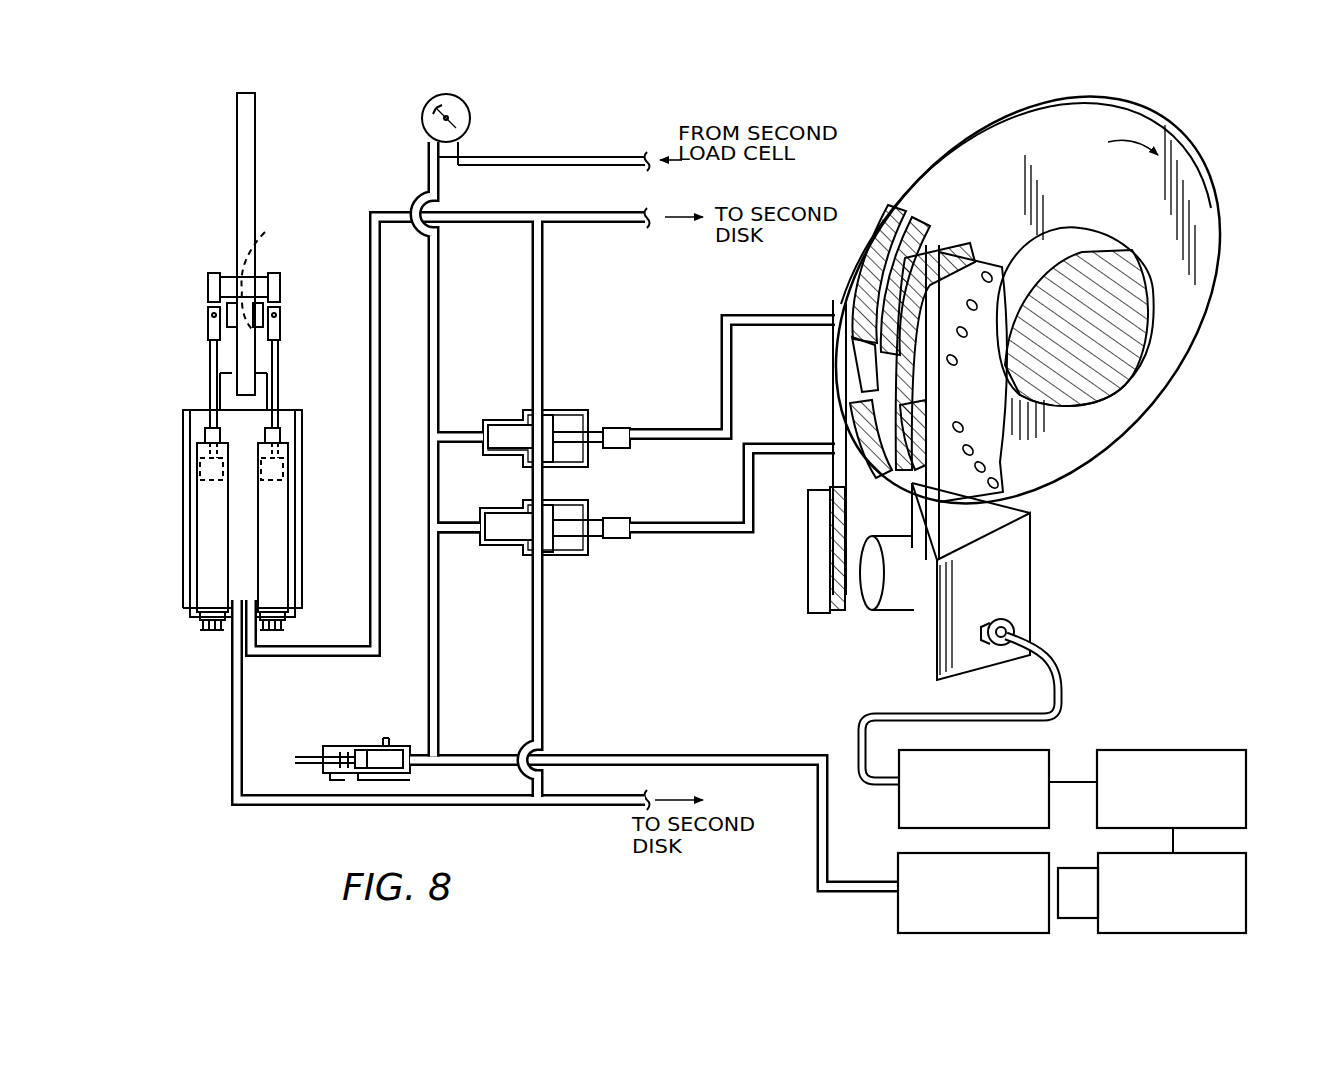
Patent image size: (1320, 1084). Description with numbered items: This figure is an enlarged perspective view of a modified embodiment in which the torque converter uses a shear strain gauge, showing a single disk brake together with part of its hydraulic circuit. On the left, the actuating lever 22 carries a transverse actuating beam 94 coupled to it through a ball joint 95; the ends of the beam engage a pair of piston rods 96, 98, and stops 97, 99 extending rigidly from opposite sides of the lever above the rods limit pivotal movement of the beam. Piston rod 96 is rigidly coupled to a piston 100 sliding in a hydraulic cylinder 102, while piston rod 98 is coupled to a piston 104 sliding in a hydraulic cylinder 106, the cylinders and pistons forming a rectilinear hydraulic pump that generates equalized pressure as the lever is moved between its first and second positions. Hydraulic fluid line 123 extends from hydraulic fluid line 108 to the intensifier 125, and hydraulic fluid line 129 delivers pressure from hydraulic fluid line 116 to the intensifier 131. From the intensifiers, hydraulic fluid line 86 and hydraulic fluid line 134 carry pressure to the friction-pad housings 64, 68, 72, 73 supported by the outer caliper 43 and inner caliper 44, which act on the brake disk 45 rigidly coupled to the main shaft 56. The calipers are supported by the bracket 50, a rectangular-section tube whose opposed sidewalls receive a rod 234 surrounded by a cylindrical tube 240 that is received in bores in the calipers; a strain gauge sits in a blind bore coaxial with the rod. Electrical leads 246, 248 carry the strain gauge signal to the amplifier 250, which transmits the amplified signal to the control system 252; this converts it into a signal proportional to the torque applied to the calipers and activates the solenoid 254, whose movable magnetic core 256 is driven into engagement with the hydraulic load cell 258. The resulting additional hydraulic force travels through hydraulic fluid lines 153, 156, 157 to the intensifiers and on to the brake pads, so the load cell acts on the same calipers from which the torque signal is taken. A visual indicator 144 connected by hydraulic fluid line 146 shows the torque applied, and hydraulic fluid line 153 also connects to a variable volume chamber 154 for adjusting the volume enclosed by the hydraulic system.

The actuating lever 22 is at (275, 150).
The ball joint 95 is at (258, 268).
The stop 99 is at (212, 272).
The stop 97 is at (275, 272).
The transverse actuating beam 94 is at (215, 310).
The piston rod 98 is at (209, 370).
The piston rod 96 is at (279, 368).
The piston 104 is at (199, 468).
The hydraulic cylinder 106 is at (200, 563).
The hydraulic cylinder 102 is at (280, 556).
The piston 100 is at (288, 460).
The hydraulic fluid line 108 is at (381, 340).
The intensifier 125 is at (512, 410).
The intensifier 131 is at (498, 557).
The hydraulic fluid line 156 is at (440, 430).
The hydraulic fluid line 157 is at (440, 520).
The hydraulic fluid line 123 is at (544, 320).
The hydraulic fluid line 129 is at (545, 668).
The hydraulic fluid line 153 is at (440, 712).
The variable volume chamber 154 is at (385, 742).
The hydraulic fluid line 116 is at (244, 712).
The visual indicator 144 is at (470, 98).
The hydraulic fluid line 146 is at (545, 157).
The hydraulic fluid line 86 is at (722, 362).
The hydraulic fluid line 134 is at (682, 535).
The brake disk 45 is at (1145, 103).
The main shaft 56 is at (1093, 247).
The outer caliper 43 is at (888, 212).
The housing 64 is at (916, 222).
The housing 72 is at (968, 250).
The housing 68 is at (845, 405).
The housing 73 is at (922, 415).
The inner caliper 44 is at (1004, 442).
The bracket 50 is at (1034, 550).
The cylindrical tube 240 is at (892, 605).
The rod 234 is at (1000, 616).
The electrical lead 246 is at (1063, 668).
The electrical lead 248 is at (1050, 712).
The amplifier 250 is at (1028, 750).
The control system 252 is at (1145, 750).
The solenoid 254 is at (1232, 933).
The movable magnetic core 256 is at (1078, 920).
The hydraulic load cell 258 is at (978, 935).